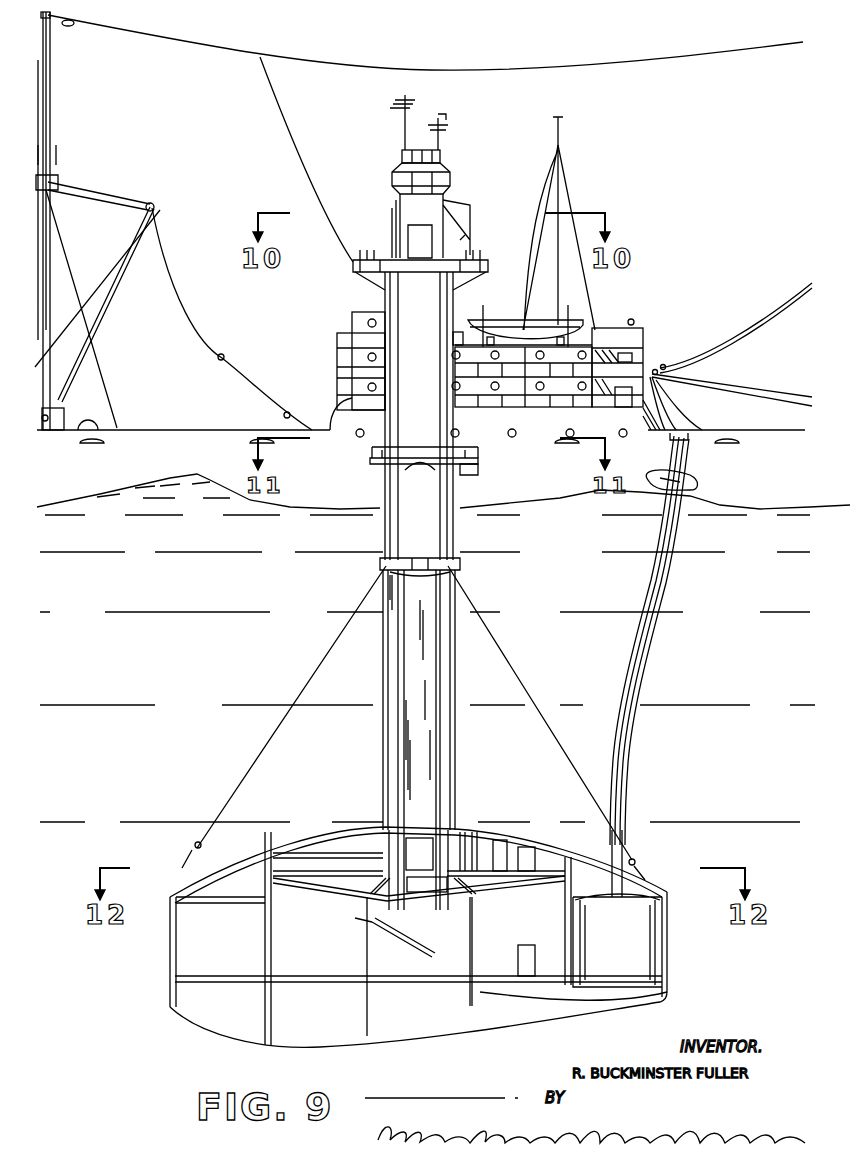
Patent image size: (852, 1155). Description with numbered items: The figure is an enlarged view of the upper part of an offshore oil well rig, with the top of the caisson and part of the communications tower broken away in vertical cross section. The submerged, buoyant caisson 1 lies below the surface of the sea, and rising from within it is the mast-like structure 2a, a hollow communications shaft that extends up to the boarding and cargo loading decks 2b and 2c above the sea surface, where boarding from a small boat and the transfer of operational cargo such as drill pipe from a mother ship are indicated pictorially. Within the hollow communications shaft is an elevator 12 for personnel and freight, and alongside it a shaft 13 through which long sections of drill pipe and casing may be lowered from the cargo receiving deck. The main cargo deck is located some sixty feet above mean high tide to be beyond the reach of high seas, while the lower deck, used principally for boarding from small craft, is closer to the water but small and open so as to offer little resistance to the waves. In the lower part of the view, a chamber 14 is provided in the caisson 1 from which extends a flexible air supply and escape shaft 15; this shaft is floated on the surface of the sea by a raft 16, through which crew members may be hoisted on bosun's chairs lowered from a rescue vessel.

The caisson 1 is at (170, 945).
The mast-like structure 2a is at (376, 672).
The boarding and cargo loading deck 2b is at (373, 470).
The boarding and cargo loading deck 2c is at (366, 252).
The elevator 12 is at (430, 732).
The shaft 13 is at (398, 797).
The chamber 14 is at (667, 925).
The flexible air supply and escape shaft 15 is at (632, 652).
The raft 16 is at (695, 476).